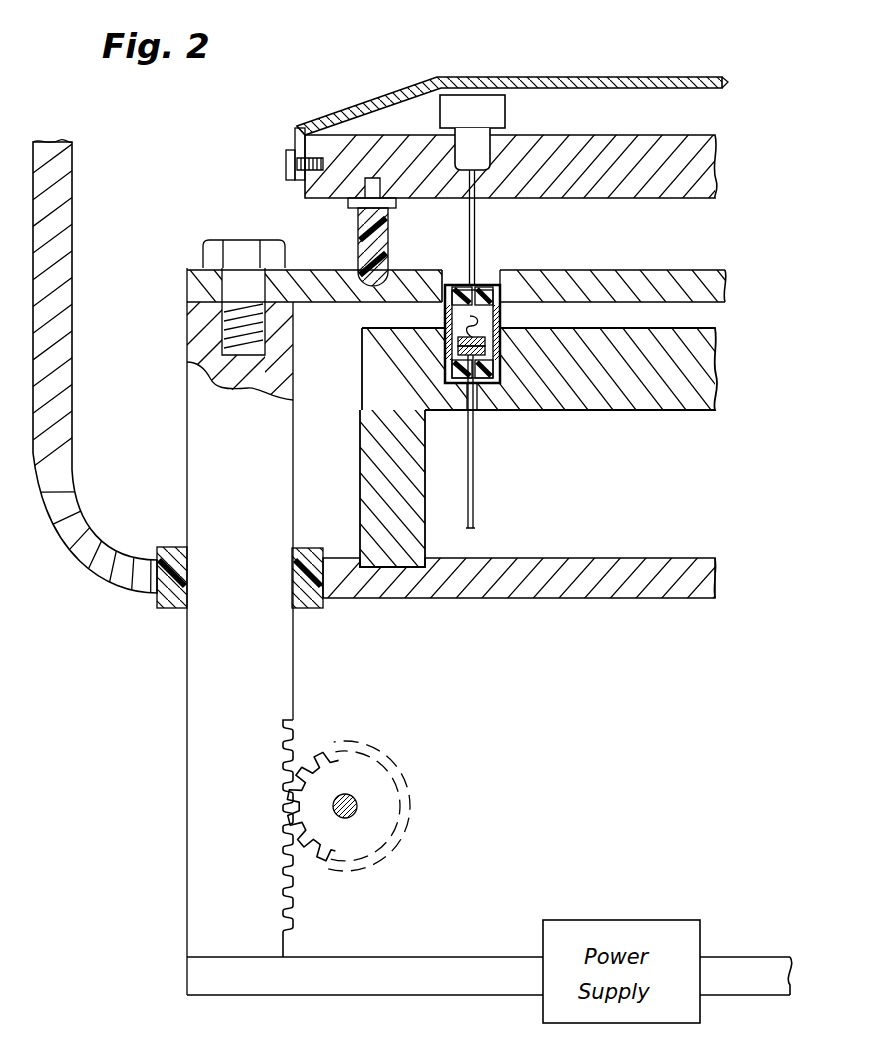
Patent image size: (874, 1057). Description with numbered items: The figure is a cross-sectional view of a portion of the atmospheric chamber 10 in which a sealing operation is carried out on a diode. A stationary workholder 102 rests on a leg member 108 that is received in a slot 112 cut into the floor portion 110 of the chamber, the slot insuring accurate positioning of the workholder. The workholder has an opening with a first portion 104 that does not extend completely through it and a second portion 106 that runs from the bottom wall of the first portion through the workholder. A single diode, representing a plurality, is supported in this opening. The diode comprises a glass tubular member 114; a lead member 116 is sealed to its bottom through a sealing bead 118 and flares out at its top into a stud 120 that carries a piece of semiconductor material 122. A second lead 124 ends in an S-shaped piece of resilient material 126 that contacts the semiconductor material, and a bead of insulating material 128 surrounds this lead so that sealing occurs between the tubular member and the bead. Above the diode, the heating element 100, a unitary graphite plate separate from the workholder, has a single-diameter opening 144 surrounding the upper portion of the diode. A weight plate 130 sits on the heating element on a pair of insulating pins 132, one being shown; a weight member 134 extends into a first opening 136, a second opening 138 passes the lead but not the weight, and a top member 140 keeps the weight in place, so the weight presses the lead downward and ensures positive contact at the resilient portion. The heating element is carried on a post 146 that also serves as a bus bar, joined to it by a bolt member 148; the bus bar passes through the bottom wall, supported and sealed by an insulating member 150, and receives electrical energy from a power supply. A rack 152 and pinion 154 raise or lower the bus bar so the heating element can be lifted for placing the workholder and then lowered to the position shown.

The atmospheric chamber 10 is at (108, 462).
The heating element 100 is at (585, 280).
The workholder 102 is at (697, 358).
The first portion of opening 104 is at (497, 353).
The second portion of opening 106 is at (462, 398).
The leg member 108 is at (413, 542).
The floor portion 110 is at (566, 570).
The slot 112 is at (408, 567).
The tubular member 114 is at (498, 280).
The lead member 116 is at (476, 470).
The sealing bead 118 is at (490, 390).
The stud 120 is at (460, 348).
The semiconductor material 122 is at (458, 340).
The second lead 124 is at (479, 232).
The resilient material 126 is at (468, 315).
The bead of insulating material 128 is at (458, 283).
The weight plate 130 is at (668, 188).
The insulating pin 132 is at (389, 237).
The weight member 134 is at (506, 111).
The first opening 136 is at (492, 150).
The second opening 138 is at (483, 183).
The top member 140 is at (607, 80).
The opening 144 is at (507, 290).
The post 146 is at (280, 507).
The bolt member 148 is at (240, 252).
The insulating member 150 is at (310, 597).
The rack 152 is at (285, 720).
The pinion 154 is at (325, 784).